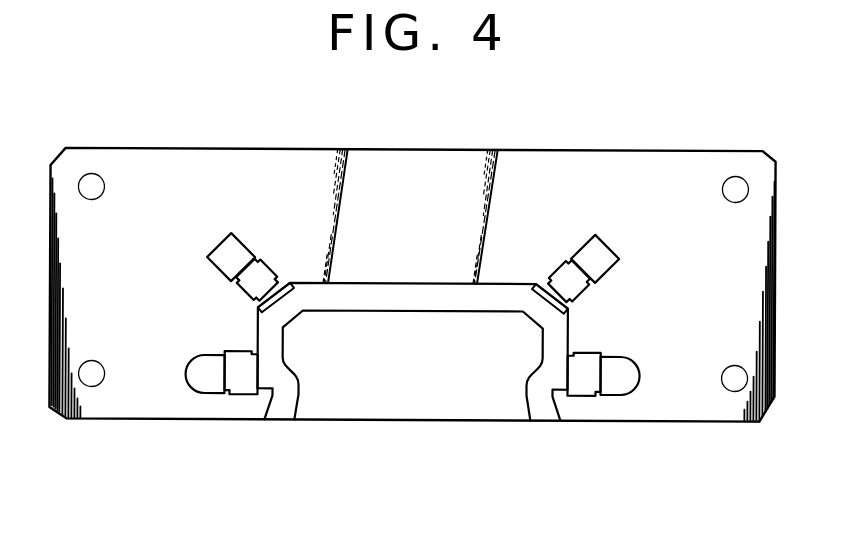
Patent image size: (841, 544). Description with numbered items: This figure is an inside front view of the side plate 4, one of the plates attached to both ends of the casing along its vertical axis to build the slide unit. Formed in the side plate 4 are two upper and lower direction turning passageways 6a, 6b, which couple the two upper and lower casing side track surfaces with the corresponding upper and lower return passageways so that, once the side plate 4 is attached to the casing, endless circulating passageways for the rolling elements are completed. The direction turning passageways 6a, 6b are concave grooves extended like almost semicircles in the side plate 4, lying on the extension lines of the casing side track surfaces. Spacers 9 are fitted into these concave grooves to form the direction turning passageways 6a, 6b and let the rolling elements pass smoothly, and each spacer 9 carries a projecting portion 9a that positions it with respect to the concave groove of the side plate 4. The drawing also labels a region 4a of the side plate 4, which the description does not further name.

The side plate 4 is at (629, 124).
The channel groove 4a is at (403, 300).
The upper direction turning passageway 6a is at (230, 252).
The lower direction turning passageway 6b is at (205, 386).
The spacer 9 is at (262, 284).
The projecting portion 9a is at (586, 298).